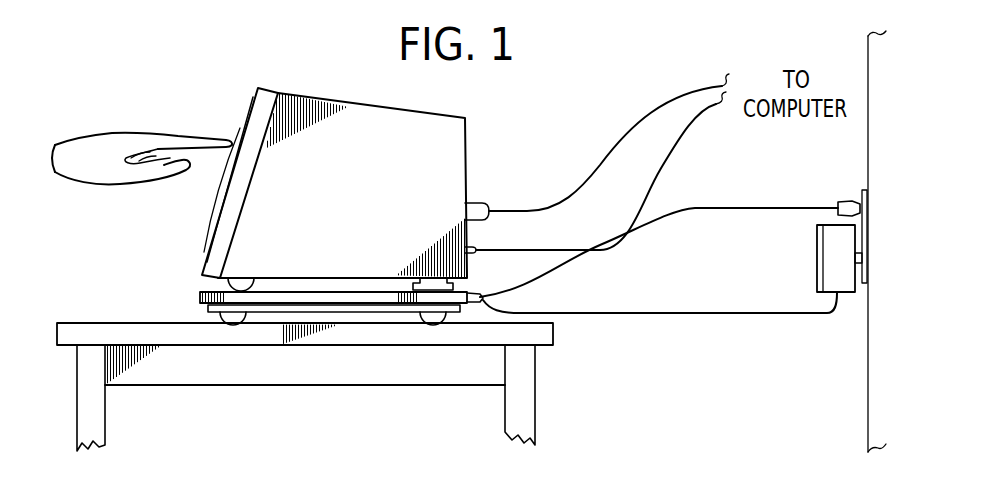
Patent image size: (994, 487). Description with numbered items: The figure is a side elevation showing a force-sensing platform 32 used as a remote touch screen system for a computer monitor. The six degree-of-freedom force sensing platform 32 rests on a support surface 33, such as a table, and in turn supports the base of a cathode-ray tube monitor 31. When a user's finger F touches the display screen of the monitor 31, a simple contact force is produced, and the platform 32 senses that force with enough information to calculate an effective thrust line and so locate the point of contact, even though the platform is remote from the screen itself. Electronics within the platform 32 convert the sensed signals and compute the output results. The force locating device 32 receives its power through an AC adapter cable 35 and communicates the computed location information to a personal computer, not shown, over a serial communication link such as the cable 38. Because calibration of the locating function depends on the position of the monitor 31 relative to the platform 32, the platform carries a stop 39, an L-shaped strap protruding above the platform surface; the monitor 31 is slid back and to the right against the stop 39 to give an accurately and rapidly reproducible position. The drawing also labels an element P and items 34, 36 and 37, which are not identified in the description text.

The finger F is at (165, 132).
The touch panel P is at (237, 142).
The cathode-ray tube monitor 31 is at (207, 232).
The force sensing platform 32 is at (200, 294).
The support surface 33 is at (112, 323).
The cable 34 is at (733, 205).
The AC adapter cable 35 is at (700, 315).
The interface box 36 is at (865, 188).
The cable to computer 37 is at (651, 113).
The RS-232 serial communication link cable 38 is at (692, 125).
The stop 39 is at (467, 283).